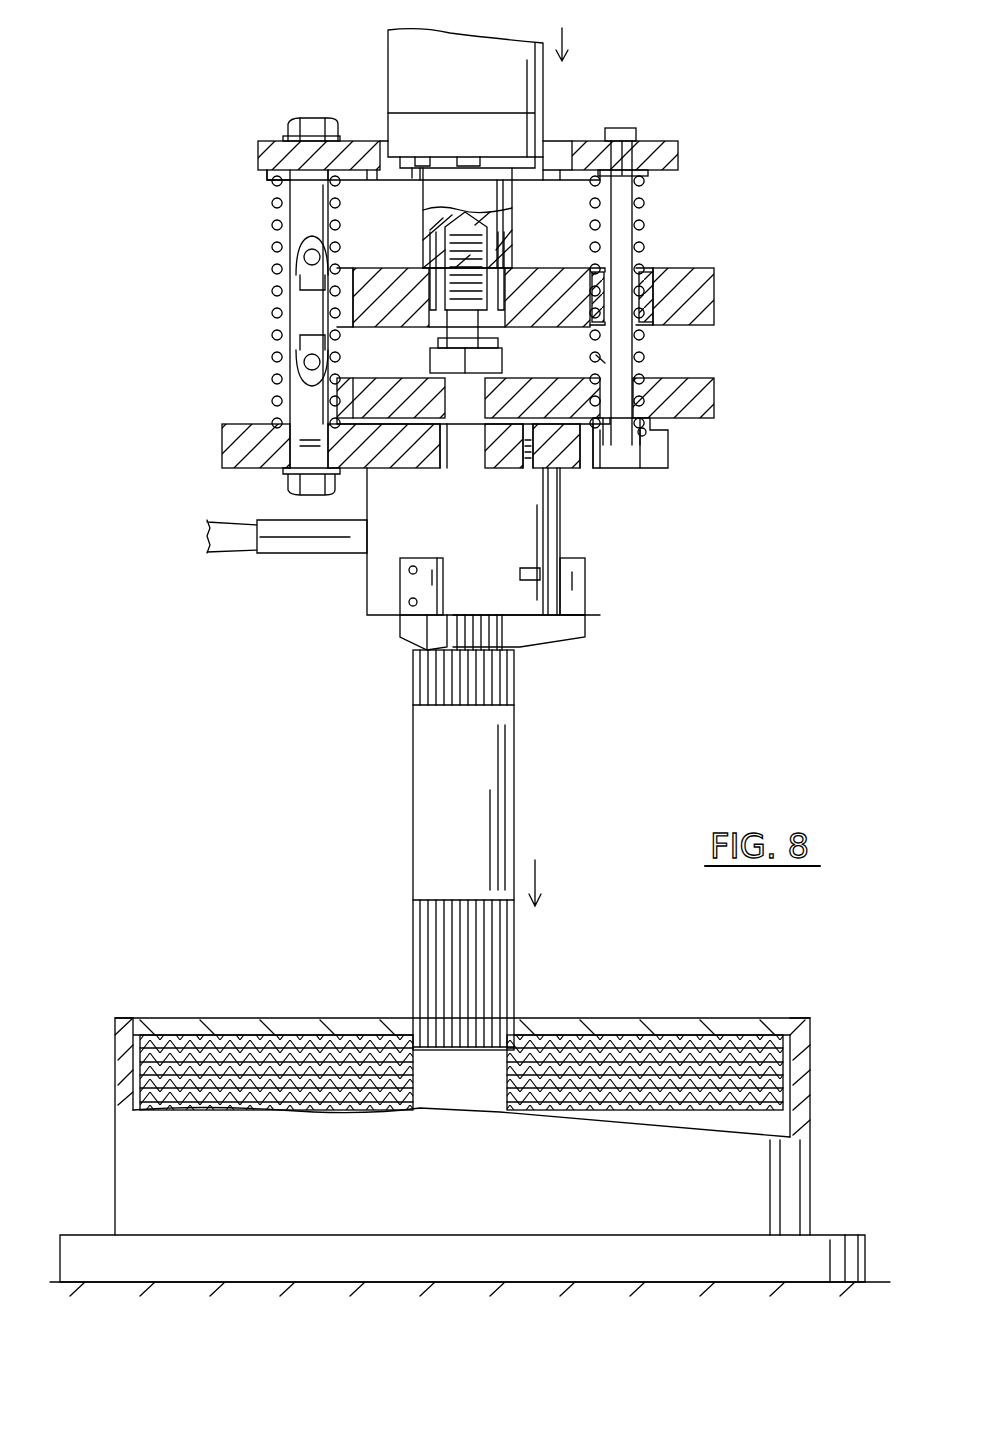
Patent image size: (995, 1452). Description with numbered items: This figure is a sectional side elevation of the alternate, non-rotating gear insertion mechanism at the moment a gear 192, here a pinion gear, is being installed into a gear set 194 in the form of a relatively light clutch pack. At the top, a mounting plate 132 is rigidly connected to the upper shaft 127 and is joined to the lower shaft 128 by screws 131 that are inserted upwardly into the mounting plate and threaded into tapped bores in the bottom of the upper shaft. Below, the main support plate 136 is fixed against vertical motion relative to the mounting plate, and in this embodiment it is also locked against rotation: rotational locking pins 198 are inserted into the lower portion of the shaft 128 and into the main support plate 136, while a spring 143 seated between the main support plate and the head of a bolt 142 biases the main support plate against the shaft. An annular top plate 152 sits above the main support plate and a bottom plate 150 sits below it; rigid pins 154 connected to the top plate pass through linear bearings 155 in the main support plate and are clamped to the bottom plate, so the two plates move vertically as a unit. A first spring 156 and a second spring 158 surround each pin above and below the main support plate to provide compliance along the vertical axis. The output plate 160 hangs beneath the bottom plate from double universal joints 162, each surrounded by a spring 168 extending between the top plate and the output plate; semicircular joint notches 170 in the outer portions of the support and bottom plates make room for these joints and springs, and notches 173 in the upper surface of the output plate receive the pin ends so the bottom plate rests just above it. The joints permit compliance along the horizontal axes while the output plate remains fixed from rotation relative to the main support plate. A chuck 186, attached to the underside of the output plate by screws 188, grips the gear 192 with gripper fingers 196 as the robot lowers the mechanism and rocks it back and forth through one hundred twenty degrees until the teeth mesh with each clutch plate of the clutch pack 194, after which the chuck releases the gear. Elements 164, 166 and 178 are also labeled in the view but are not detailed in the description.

The shaft 127 is at (388, 36).
The mounting plate 132 is at (524, 130).
The screws 131 is at (530, 180).
The shaft 128 is at (482, 197).
The top plate 152 is at (678, 152).
The rigid pins 154 is at (630, 130).
The first spring 156 is at (650, 218).
The second spring 158 is at (650, 358).
The main support plate 136 is at (714, 288).
The linear bearings 155 is at (650, 306).
The bottom plate 150 is at (714, 402).
The joint notches 170 is at (352, 330).
The rotational locking pins 198 is at (430, 254).
The spring 143 is at (500, 345).
The bolt 142 is at (502, 364).
The output plate 160 is at (222, 445).
The notches 173 is at (595, 468).
The bolt 178 is at (302, 118).
The spring 168 is at (277, 201).
The double universal joints 162 is at (268, 314).
The upper pin 164 is at (300, 257).
The lower pin 166 is at (300, 366).
The chuck 186 is at (555, 519).
The screws 188 is at (545, 575).
The gripper fingers 196 is at (400, 628).
The gear 192 is at (514, 760).
The gear set 194 is at (640, 975).